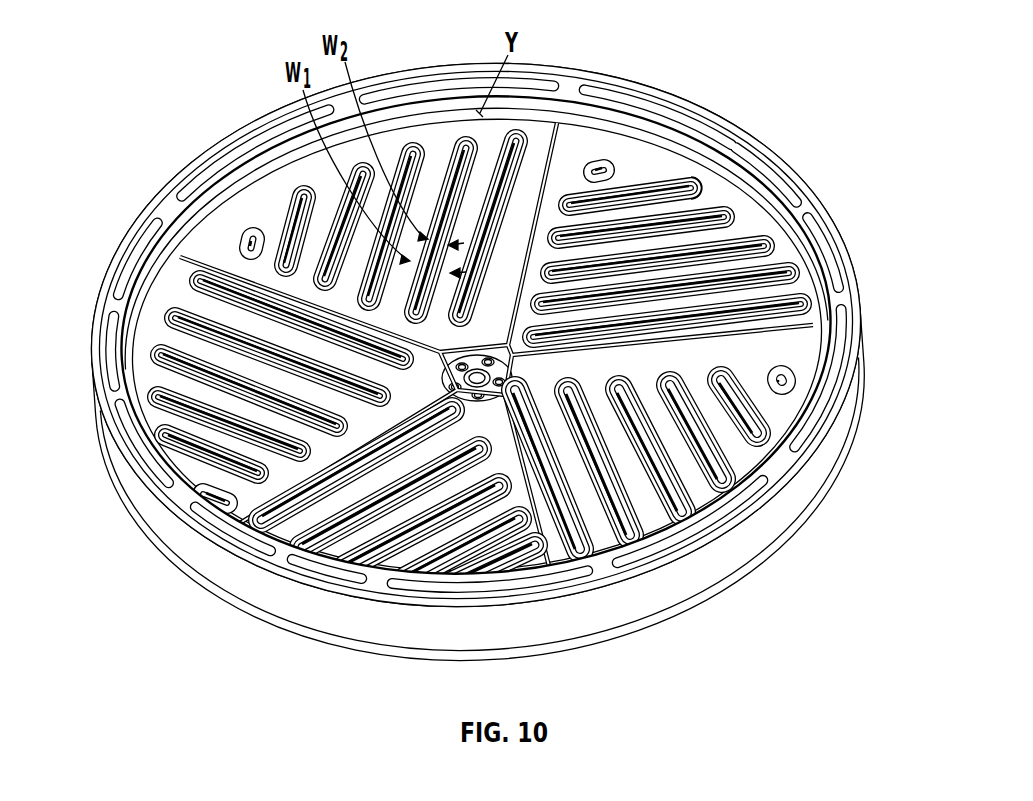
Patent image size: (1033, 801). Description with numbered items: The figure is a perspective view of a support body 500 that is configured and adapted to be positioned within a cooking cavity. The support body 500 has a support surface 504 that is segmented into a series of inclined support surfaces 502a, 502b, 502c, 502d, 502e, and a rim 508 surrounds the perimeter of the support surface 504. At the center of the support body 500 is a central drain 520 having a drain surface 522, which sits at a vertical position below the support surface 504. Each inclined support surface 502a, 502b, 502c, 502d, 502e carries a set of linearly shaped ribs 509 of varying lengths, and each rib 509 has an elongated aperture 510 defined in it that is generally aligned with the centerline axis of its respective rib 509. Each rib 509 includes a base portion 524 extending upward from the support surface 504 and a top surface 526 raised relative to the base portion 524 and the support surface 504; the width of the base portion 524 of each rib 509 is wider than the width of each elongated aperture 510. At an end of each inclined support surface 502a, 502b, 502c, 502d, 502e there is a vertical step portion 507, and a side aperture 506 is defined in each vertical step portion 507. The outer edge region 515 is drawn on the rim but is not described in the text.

The support body 500 is at (824, 94).
The inclined support surface 502a is at (443, 137).
The inclined support surface 502b is at (486, 272).
The inclined support surface 502c is at (714, 500).
The inclined support surface 502d is at (283, 542).
The inclined support surface 502e is at (167, 297).
The support surface 504 is at (582, 148).
The side aperture 506 is at (562, 130).
The vertical step portion 507 is at (713, 483).
The rim 508 is at (835, 293).
The rib 509 is at (695, 188).
The elongated aperture 510 is at (670, 177).
The outer edge 515 is at (255, 148).
The central drain 520 is at (445, 383).
The drain surface 522 is at (647, 490).
The base portion 524 is at (787, 280).
The top surface 526 is at (770, 260).